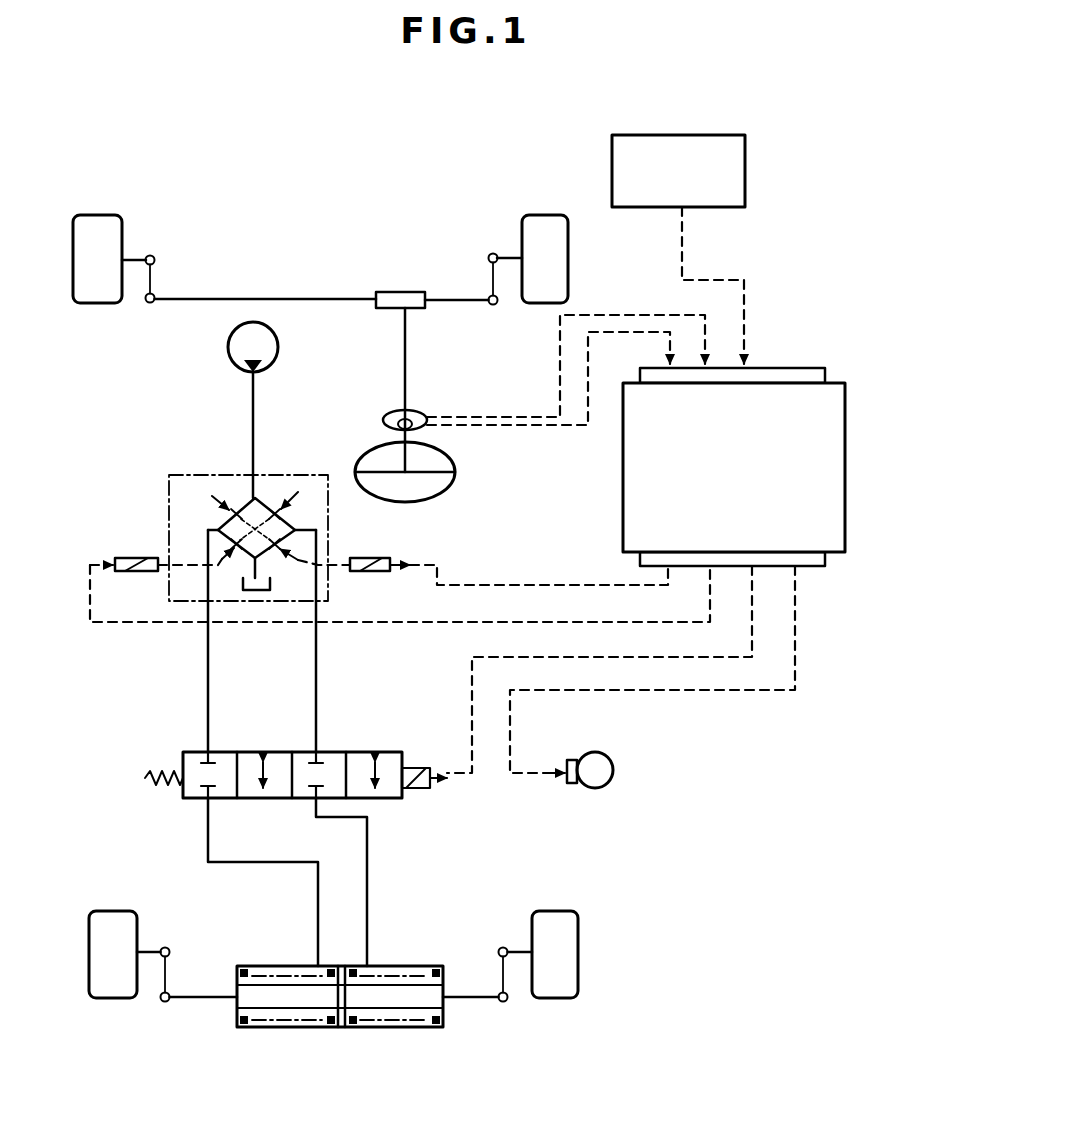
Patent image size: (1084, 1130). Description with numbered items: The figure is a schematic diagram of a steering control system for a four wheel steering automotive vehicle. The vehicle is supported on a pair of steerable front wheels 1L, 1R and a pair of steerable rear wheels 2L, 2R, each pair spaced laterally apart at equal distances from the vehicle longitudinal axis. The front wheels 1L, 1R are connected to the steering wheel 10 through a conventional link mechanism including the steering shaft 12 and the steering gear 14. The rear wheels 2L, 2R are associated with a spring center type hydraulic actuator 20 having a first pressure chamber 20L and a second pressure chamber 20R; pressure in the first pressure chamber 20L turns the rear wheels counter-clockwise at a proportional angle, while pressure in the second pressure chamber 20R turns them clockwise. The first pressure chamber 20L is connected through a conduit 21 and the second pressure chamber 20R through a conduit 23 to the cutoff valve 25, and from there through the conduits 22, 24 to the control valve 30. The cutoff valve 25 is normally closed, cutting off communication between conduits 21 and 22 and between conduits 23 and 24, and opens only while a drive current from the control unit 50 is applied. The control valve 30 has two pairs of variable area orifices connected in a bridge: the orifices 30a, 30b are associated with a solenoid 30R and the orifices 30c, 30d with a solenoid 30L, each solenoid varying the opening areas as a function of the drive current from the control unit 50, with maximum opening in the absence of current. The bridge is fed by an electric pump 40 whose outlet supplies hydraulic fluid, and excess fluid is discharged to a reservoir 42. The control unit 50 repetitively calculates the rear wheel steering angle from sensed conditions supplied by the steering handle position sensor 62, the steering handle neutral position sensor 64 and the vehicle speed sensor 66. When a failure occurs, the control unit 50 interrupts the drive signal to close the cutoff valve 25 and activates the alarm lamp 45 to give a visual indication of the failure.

The steerable front wheel 1L is at (105, 215).
The steerable front wheel 1R is at (545, 215).
The steering gear 14 is at (392, 292).
The steering shaft 12 is at (406, 328).
The steering wheel 10 is at (456, 466).
The electric pump 40 is at (228, 347).
The steering handle neutral position sensor 64 is at (400, 412).
The steering handle position sensor 62 is at (410, 420).
The vehicle speed sensor 66 is at (688, 135).
The control unit 50 is at (851, 404).
The control valve 30 is at (169, 475).
The variable area orifice 30a is at (234, 510).
The variable area orifice 30b is at (283, 551).
The variable area orifice 30c is at (232, 552).
The variable area orifice 30d is at (278, 508).
The solenoid 30L is at (131, 558).
The solenoid 30R is at (378, 558).
The reservoir 42 is at (262, 595).
The conduit 22 is at (208, 674).
The conduit 24 is at (317, 674).
The cutoff valve 25 is at (366, 752).
The conduit 21 is at (208, 840).
The conduit 23 is at (368, 872).
The alarm lamp 45 is at (613, 760).
The hydraulic actuator 20 is at (296, 1028).
The first pressure chamber 20L is at (274, 968).
The second pressure chamber 20R is at (408, 968).
The steerable rear wheel 2L is at (120, 999).
The steerable rear wheel 2R is at (553, 999).